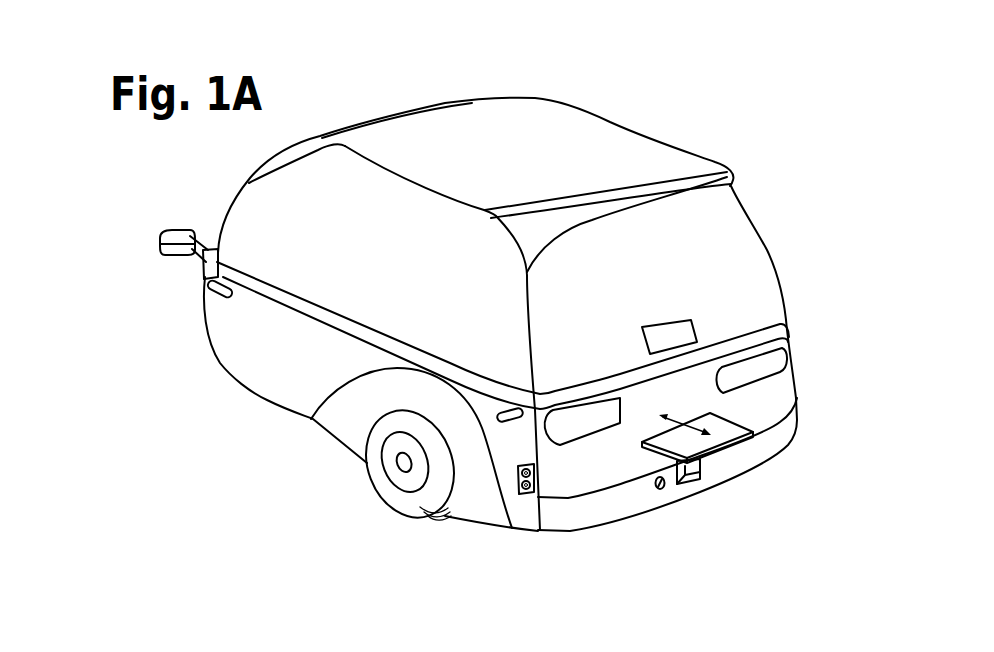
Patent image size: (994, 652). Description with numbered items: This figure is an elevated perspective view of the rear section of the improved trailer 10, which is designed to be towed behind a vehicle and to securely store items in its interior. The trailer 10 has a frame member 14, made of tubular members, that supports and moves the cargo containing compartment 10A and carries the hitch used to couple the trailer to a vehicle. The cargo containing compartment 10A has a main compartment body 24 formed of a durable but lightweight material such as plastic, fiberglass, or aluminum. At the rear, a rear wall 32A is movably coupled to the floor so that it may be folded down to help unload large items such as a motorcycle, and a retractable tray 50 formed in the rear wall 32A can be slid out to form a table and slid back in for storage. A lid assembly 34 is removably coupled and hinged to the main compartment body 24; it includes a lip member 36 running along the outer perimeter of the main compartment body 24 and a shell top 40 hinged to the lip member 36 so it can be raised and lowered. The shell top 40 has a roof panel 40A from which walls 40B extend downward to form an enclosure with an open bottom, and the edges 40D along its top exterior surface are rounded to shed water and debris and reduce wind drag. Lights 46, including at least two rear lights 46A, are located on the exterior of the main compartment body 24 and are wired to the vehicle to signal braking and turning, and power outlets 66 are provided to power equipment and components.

The improved trailer 10 is at (768, 103).
The cargo containing compartment 10A is at (487, 68).
The frame member 14 is at (158, 270).
The main compartment body 24 is at (255, 395).
The rear wall 32A is at (790, 396).
The lid assembly 34 is at (786, 230).
The lip member 36 is at (783, 332).
The shell top 40 is at (569, 74).
The roof panel 40A is at (613, 140).
The walls 40B is at (735, 196).
The rounded edges 40D is at (693, 148).
The lights 46 is at (210, 289).
The rear lights 46A is at (780, 362).
The retractable tray 50 is at (744, 433).
The power outlets 66 is at (510, 486).